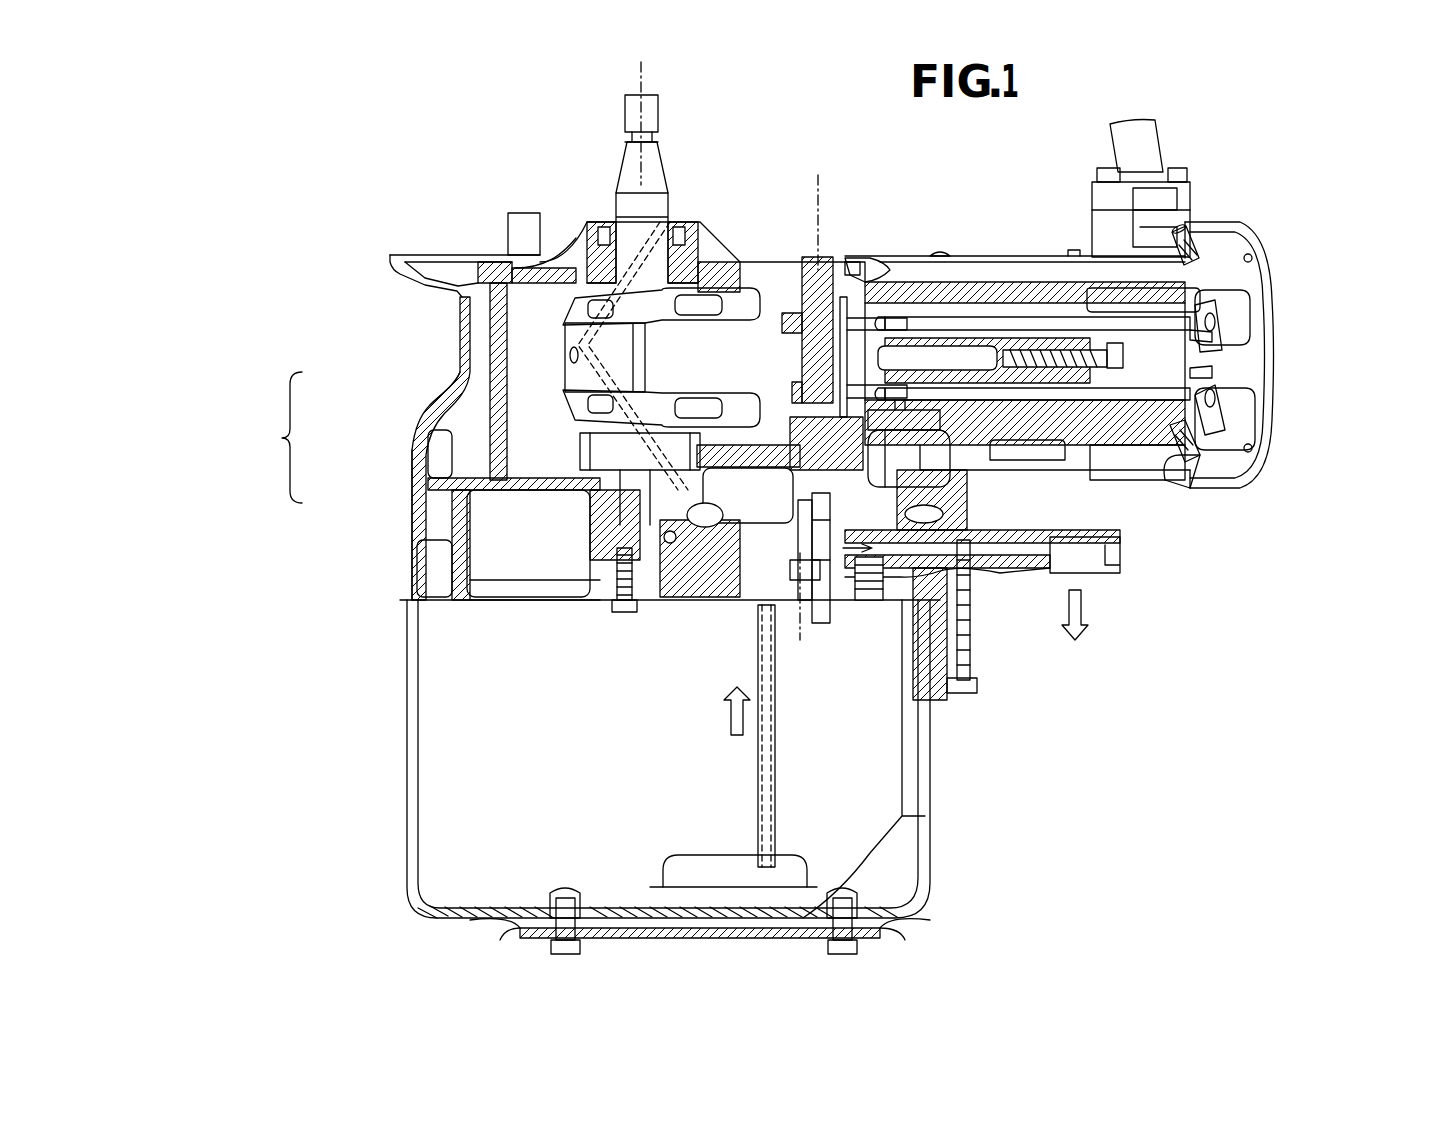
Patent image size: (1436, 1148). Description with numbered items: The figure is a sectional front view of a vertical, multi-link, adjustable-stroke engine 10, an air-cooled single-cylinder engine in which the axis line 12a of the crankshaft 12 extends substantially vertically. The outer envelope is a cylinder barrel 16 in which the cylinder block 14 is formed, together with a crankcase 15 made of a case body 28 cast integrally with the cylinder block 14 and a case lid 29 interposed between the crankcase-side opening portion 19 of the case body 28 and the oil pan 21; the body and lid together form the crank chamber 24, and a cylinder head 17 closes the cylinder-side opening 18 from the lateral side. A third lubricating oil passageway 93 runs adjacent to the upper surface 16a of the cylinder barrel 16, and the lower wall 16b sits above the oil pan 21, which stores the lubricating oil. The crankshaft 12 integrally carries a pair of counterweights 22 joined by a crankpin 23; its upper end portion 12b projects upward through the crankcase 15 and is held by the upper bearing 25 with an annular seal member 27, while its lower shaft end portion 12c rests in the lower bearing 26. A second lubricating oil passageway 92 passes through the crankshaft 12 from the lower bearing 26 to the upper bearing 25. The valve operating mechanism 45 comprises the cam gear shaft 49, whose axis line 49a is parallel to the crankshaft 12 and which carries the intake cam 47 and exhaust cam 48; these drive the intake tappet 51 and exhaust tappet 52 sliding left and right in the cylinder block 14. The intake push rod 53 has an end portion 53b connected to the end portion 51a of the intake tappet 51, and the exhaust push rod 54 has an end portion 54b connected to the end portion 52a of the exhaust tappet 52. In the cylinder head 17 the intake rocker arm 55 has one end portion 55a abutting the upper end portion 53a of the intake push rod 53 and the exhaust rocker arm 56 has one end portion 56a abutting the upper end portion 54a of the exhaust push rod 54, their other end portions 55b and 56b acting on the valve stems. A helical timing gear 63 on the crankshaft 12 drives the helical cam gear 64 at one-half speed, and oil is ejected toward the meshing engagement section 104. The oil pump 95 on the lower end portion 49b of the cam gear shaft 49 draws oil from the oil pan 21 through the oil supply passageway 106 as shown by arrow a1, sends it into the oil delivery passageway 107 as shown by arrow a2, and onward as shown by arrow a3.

The engine 10 is at (300, 130).
The crankshaft 12 is at (670, 155).
The axis line 12a is at (648, 70).
The upper end portion 12b is at (653, 112).
The lower shaft end portion 12c is at (618, 488).
The cylinder block 14 is at (950, 255).
The crankcase 15 is at (275, 437).
The cylinder barrel 16 is at (665, 397).
The upper surface 16a is at (455, 252).
The crankcase lower wall 16b is at (510, 605).
The cylinder head 17 is at (1205, 495).
The cylinder-side opening 18 is at (1075, 256).
The crankcase-side opening portion 19 is at (412, 490).
The oil pan 21 is at (405, 770).
The counterweights 22 is at (742, 312).
The crankpin 23 is at (548, 378).
The crank chamber 24 is at (490, 365).
The upper bearing 25 is at (655, 225).
The lower bearing 26 is at (598, 498).
The annular seal member 27 is at (606, 222).
The case body 28 is at (420, 418).
The case lid 29 is at (405, 528).
The valve operating mechanism 45 is at (1137, 270).
The intake cam 47 is at (782, 322).
The exhaust cam 48 is at (793, 392).
The cam gear shaft 49 is at (838, 262).
The axis line 49a is at (822, 175).
The lower end portion 49b is at (812, 497).
The intake tappet 51 is at (890, 318).
The end portion 51a is at (964, 358).
The exhaust tappet 52 is at (905, 450).
The end portion 52a is at (937, 358).
The intake push rod 53 is at (975, 320).
The upper end portion 53a is at (1218, 338).
The end portion 53b is at (938, 282).
The exhaust push rod 54 is at (995, 400).
The upper end portion 54a is at (1192, 368).
The end portion 54b is at (903, 390).
The intake rocker arm 55 is at (1235, 305).
The end portion 55a is at (1218, 345).
The other end portion 55b is at (1240, 258).
The exhaust rocker arm 56 is at (1240, 420).
The end portion 56a is at (1228, 392).
The other end portion 56b is at (1255, 478).
The timing gear 63 is at (630, 468).
The cam gear 64 is at (735, 463).
The second lubricating oil passageway 92 is at (575, 455).
The third lubricating oil passageway 93 is at (965, 290).
The oil pump 95 is at (835, 592).
The meshing engagement section 104 is at (723, 523).
The oil supply passageway 106 is at (776, 730).
The oil delivery passageway 107 is at (960, 550).
The arrow a1 is at (724, 711).
The arrow a2 is at (799, 600).
The arrow a3 is at (1087, 612).